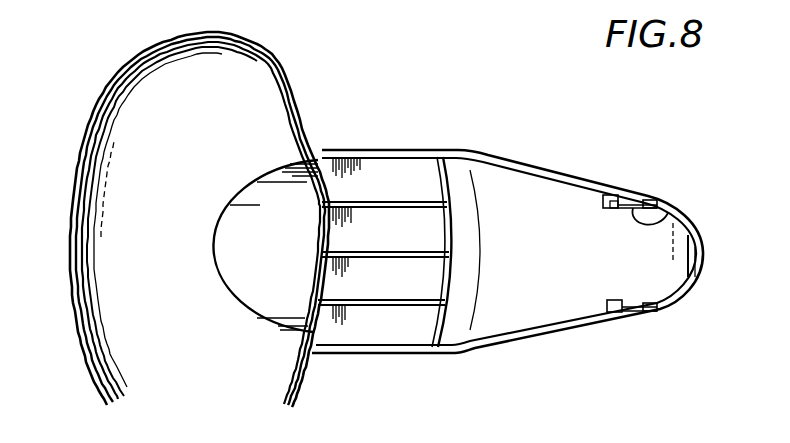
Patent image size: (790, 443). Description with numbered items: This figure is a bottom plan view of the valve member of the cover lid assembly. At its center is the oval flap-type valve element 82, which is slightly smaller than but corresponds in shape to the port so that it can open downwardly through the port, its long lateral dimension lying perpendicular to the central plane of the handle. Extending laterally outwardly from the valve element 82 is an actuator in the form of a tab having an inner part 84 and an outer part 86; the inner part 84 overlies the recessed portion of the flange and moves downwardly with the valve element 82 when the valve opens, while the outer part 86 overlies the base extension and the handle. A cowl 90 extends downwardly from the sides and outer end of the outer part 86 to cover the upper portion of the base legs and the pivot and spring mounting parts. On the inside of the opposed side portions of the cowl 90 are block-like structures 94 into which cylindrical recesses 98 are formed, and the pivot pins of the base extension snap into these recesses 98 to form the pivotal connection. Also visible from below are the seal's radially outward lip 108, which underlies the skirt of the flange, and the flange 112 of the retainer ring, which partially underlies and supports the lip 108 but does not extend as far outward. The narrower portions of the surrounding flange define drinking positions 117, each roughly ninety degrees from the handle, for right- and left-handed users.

The valve element 82 is at (202, 221).
The inner part 84 is at (357, 170).
The outer part 86 is at (510, 203).
The cowl 90 is at (577, 178).
The block-like structures 94 is at (614, 196).
The cylindrical recesses 98 is at (673, 212).
The lip 108 is at (125, 77).
The flange 112 is at (78, 297).
The drinking positions 117 is at (385, 258).